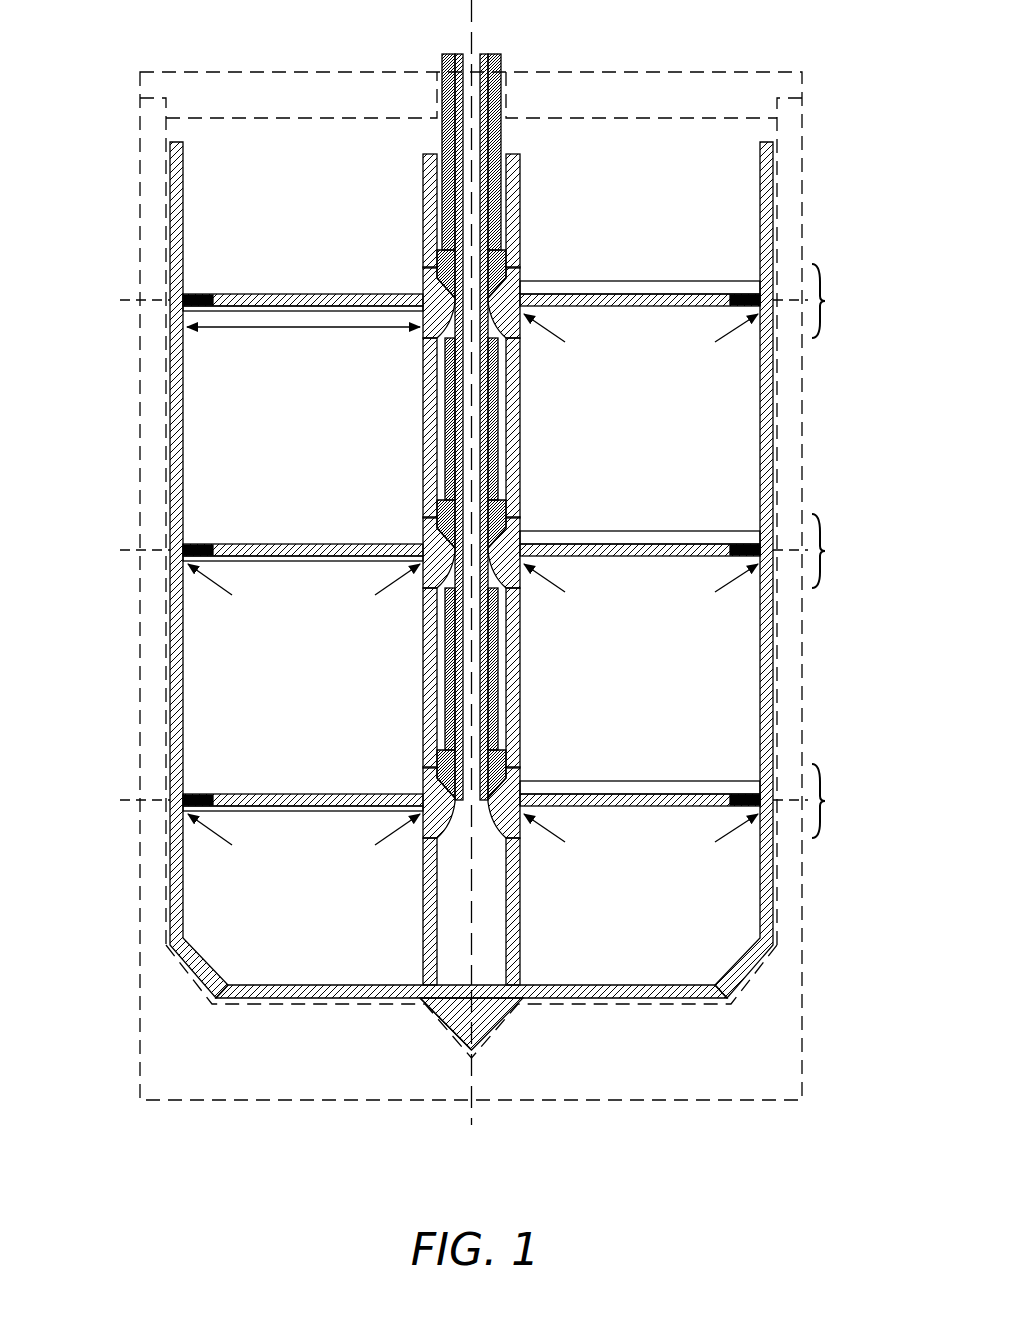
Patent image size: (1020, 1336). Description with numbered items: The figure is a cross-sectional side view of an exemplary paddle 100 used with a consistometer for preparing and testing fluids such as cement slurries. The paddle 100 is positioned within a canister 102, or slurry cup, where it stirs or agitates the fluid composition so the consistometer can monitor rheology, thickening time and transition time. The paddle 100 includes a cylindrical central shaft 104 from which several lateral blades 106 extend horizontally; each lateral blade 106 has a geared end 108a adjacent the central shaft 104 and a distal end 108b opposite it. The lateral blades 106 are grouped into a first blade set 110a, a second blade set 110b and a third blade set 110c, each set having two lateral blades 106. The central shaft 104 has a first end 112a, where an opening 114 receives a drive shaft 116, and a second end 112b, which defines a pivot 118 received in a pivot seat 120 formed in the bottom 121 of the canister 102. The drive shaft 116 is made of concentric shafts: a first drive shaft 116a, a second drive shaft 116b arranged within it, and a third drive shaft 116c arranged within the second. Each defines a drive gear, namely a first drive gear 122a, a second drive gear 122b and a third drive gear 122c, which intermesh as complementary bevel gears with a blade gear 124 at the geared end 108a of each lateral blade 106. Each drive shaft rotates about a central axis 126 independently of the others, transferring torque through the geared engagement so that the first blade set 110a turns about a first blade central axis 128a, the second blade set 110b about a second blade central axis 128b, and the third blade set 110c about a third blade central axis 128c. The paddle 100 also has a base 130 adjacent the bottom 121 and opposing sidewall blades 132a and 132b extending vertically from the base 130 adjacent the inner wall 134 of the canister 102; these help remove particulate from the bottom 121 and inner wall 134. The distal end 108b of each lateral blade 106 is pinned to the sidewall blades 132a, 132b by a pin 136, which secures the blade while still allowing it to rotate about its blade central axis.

The paddle 100 is at (266, 142).
The canister 102 is at (150, 405).
The central shaft 104 is at (525, 188).
The lateral blade 106 is at (300, 294).
The geared end 108a is at (440, 593).
The distal end 108b is at (472, 593).
The first blade set 110a is at (825, 301).
The second blade set 110b is at (825, 551).
The third blade set 110c is at (825, 801).
The first end 112a is at (420, 158).
The second end 112b is at (420, 972).
The opening 114 is at (508, 152).
The drive shaft 116 is at (506, 68).
The first drive shaft 116a is at (445, 195).
The second drive shaft 116b is at (447, 440).
The third drive shaft 116c is at (447, 690).
The pivot 118 is at (505, 1018).
The pivot seat 120 is at (456, 1040).
The bottom 121 is at (335, 1005).
The first drive gear 122a is at (512, 242).
The second drive gear 122b is at (512, 496).
The third drive gear 122c is at (512, 745).
The blade gear 124 is at (425, 286).
The central axis 126 is at (478, 888).
The first blade central axis 128a is at (170, 300).
The second blade central axis 128b is at (170, 550).
The third blade central axis 128c is at (170, 800).
The base 130 is at (258, 1000).
The sidewall blade 132a is at (172, 692).
The sidewall blade 132b is at (774, 712).
The inner wall 134 is at (172, 602).
The pin 136 is at (200, 294).